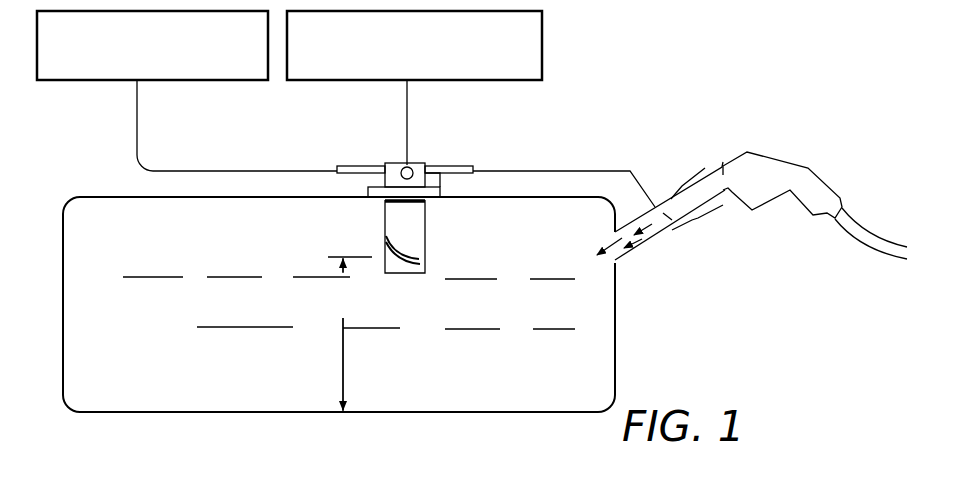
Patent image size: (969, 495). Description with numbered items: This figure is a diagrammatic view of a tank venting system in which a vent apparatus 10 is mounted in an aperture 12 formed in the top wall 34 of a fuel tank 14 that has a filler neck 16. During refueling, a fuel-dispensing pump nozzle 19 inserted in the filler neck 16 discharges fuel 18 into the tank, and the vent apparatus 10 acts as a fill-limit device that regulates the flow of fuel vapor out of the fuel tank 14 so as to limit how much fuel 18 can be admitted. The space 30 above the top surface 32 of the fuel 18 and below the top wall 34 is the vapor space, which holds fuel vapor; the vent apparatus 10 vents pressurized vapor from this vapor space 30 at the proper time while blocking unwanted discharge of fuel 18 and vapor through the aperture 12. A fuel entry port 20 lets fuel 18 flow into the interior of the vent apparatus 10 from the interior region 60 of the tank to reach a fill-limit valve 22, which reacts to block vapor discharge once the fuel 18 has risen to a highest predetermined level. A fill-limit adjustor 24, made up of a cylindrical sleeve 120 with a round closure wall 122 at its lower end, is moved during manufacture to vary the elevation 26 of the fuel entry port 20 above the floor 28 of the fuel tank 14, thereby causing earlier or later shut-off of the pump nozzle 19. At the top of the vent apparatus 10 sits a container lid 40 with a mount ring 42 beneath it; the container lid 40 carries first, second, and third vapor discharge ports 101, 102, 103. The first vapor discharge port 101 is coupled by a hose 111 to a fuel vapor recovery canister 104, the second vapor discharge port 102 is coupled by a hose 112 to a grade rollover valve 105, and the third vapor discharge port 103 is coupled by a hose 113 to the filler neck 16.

The vent apparatus 10 is at (467, 156).
The aperture 12 is at (384, 201).
The fuel tank 14 is at (117, 192).
The filler neck 16 is at (681, 225).
The fuel 18 is at (252, 384).
The fuel-dispensing pump nozzle 19 is at (782, 152).
The fuel entry port 20 is at (399, 263).
The fill-limit valve 22 is at (404, 225).
The fill-limit adjustor 24 is at (433, 236).
The elevation 26 is at (350, 334).
The floor 28 is at (398, 407).
The vapor space 30 is at (273, 220).
The top surface 32 is at (227, 277).
The top wall 34 is at (175, 202).
The container lid 40 is at (392, 157).
The mount ring 42 is at (443, 190).
The interior region 60 is at (93, 231).
The first vapor discharge port 101 is at (421, 164).
The second vapor discharge port 102 is at (340, 163).
The third vapor discharge port 103 is at (475, 165).
The fuel vapor recovery canister 104 is at (542, 48).
The grade rollover valve 105 is at (222, 80).
The hose 111 is at (407, 96).
The hose 112 is at (186, 163).
The hose 113 is at (600, 168).
The sleeve 120 is at (426, 248).
The closure wall 122 is at (417, 274).